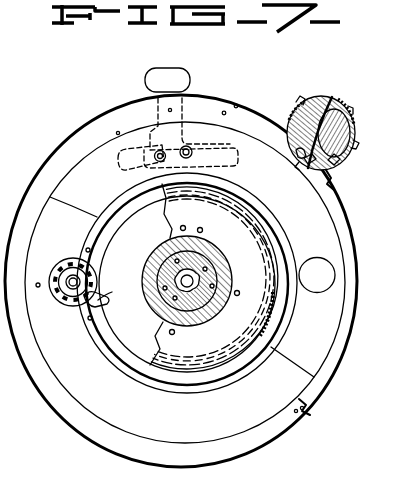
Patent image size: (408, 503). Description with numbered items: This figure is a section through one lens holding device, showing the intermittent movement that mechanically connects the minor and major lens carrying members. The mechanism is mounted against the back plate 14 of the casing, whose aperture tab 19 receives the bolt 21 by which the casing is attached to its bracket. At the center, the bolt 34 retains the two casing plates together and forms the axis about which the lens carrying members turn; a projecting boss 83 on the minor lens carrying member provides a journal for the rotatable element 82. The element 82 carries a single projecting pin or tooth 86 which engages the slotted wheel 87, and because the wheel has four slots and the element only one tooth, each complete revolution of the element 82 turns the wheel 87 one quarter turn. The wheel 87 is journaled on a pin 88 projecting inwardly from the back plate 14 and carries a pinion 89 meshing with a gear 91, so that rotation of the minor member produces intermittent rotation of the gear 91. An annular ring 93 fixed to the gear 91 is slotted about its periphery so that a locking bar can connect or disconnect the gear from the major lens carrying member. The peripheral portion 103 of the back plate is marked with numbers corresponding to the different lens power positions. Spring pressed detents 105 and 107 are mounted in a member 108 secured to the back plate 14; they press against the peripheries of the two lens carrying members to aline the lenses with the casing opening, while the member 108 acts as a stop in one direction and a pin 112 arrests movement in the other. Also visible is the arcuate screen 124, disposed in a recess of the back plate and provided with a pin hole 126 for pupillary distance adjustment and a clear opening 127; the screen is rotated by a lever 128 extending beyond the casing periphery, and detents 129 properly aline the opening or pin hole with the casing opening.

The back plate 14 is at (52, 409).
The aperture tab 19 is at (333, 183).
The bolt 21 is at (330, 108).
The bolt 34 is at (199, 282).
The element 82 is at (125, 333).
The projecting boss 83 is at (210, 300).
The projecting pin or tooth 86 is at (100, 299).
The slotted wheel 87 is at (86, 304).
The pin 88 is at (71, 290).
The pinion 89 is at (65, 260).
The gear 91 is at (275, 312).
The annular ring 93 is at (157, 257).
The peripheral portion 103 is at (88, 129).
The spring pressed detent 105 is at (308, 163).
The spring pressed detent 107 is at (297, 154).
The member 108 is at (337, 162).
The pin 112 is at (306, 407).
The screen 124 is at (311, 360).
The pin hole 126 is at (238, 276).
The clear opening 127 is at (318, 263).
The lever 128 is at (147, 80).
The detents 129 is at (233, 107).